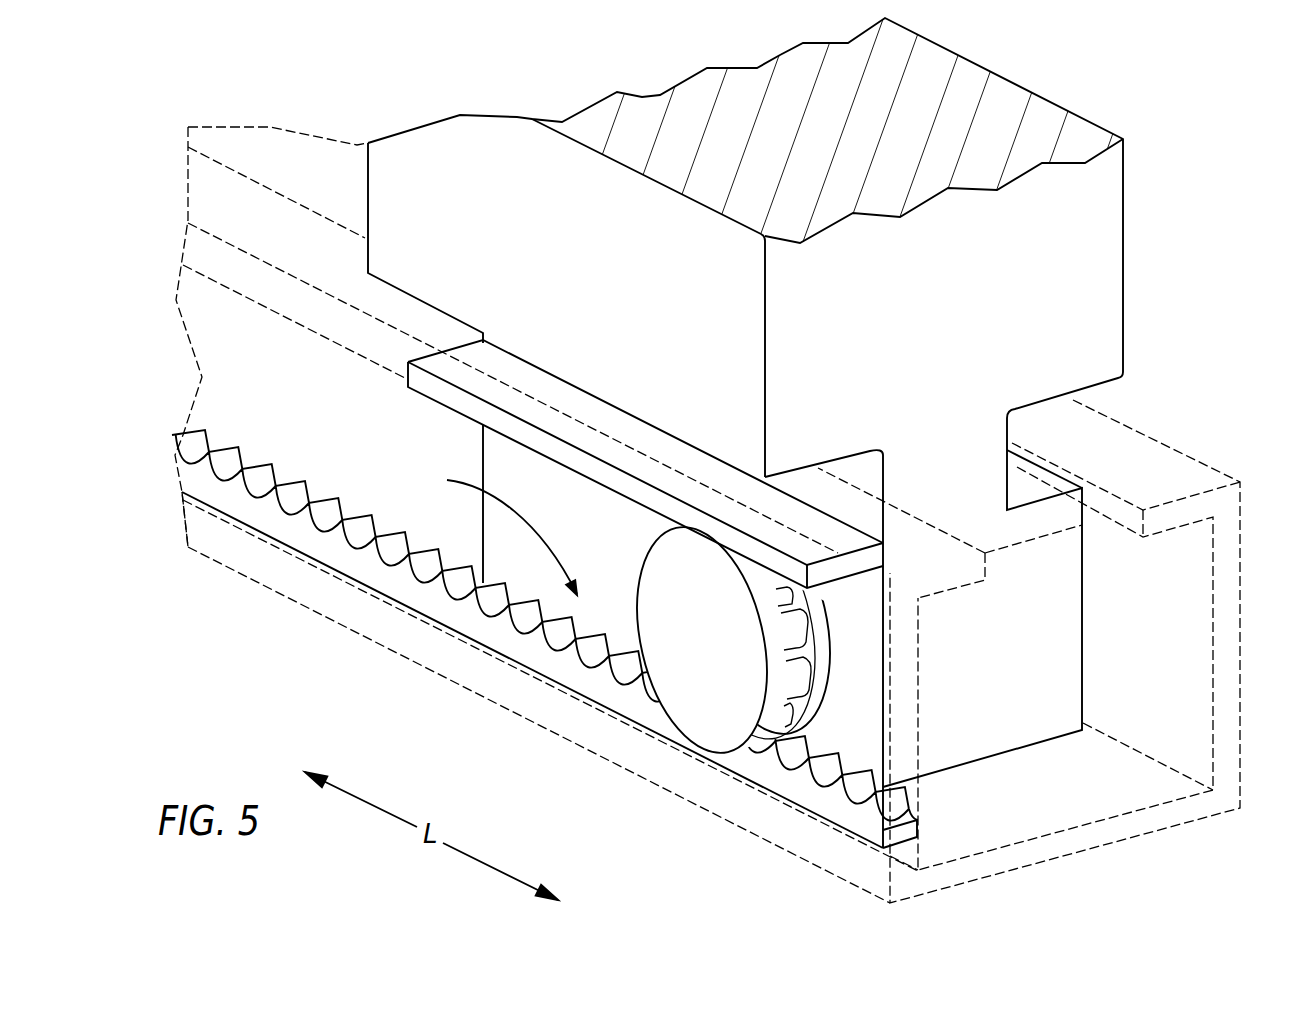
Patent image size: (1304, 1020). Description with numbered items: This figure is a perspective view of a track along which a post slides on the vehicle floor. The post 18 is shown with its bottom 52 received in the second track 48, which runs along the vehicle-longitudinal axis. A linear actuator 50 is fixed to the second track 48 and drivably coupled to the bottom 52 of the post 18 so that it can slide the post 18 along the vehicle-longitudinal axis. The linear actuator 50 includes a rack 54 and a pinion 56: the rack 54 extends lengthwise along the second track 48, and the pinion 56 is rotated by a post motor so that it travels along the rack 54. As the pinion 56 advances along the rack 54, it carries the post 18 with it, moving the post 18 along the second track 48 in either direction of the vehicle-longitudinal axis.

The post 18 is at (1124, 232).
The second track 48 is at (1172, 477).
The linear actuator 50 is at (497, 529).
The bottom 52 is at (1038, 612).
The rack 54 is at (495, 628).
The pinion 56 is at (717, 702).